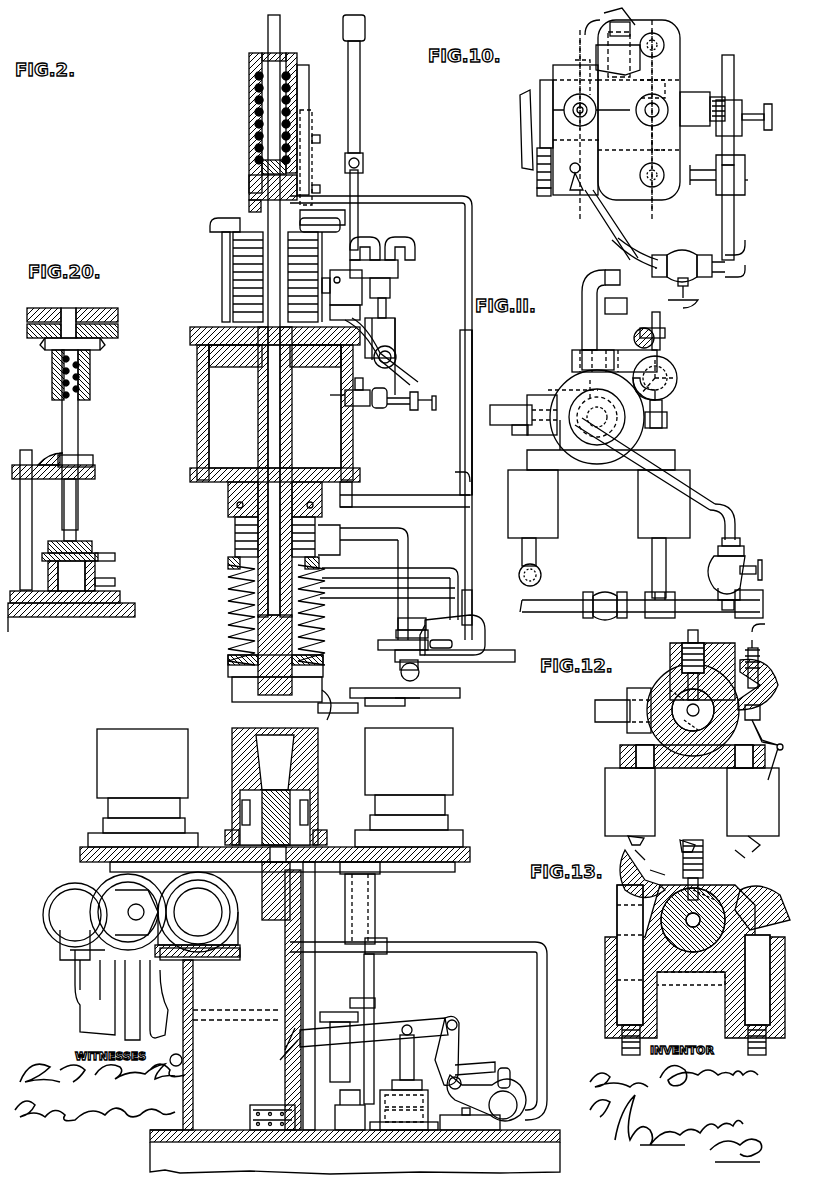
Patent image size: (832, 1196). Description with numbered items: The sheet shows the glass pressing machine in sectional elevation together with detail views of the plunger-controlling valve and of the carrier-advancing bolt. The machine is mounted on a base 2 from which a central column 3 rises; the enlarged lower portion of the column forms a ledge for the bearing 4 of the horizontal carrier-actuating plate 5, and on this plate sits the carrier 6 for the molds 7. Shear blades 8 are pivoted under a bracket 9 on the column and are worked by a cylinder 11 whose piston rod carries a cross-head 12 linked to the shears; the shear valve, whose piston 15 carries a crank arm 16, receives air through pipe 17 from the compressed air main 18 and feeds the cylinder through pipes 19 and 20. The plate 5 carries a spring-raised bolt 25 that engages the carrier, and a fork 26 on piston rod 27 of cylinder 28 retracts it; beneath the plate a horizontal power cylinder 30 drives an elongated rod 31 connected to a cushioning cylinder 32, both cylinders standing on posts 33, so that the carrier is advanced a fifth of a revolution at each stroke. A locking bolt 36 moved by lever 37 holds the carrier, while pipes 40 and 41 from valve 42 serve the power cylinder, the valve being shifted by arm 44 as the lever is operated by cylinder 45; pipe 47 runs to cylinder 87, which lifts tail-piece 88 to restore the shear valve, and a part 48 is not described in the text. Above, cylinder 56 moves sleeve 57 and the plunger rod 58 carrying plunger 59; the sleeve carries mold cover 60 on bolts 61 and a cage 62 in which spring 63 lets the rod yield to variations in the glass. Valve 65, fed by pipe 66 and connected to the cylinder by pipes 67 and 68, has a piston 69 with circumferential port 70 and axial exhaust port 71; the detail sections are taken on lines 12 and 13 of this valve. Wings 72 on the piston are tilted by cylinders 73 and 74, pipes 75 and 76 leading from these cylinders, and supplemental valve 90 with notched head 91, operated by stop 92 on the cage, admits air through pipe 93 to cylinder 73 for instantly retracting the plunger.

In FIG. 2, the base 2 is at (365, 1152).
In FIG. 20, the base 2 is at (100, 610).
In FIG. 2, the central column 3 is at (240, 248).
In FIG. 2, the bearing 4 is at (376, 900).
In FIG. 20, the carrier-actuating plate 5 is at (108, 340).
In FIG. 20, the carrier 6 is at (105, 310).
In FIG. 2, the molds 7 is at (135, 740).
In FIG. 2, the shear blades 8 is at (432, 698).
In FIG. 2, the bracket 9 is at (303, 655).
In FIG. 2, the cylinder 11 is at (340, 715).
In FIG. 10, the cross-head 12 is at (594, 29).
In FIG. 10, the section line 13 is at (638, 21).
In FIG. 2, the piston 15 is at (470, 625).
In FIG. 2, the crank arm 16 is at (475, 636).
In FIG. 2, the pipe 17 is at (472, 601).
In FIG. 2, the compressed air main 18 is at (360, 82).
In FIG. 2, the pipe 19 is at (420, 592).
In FIG. 2, the pipe 20 is at (462, 573).
In FIG. 2, the spring-raised bolt 25 is at (374, 966).
In FIG. 20, the spring-raised bolt 25 is at (72, 415).
In FIG. 2, the fork 26 is at (358, 1018).
In FIG. 20, the fork 26 is at (95, 482).
In FIG. 20, the piston rod 27 is at (78, 512).
In FIG. 2, the cylinder 28 is at (320, 1122).
In FIG. 20, the cylinder 28 is at (95, 568).
In FIG. 2, the power cylinder 30 is at (197, 914).
In FIG. 2, the elongated rod 31 is at (135, 915).
In FIG. 2, the cushioning cylinder 32 is at (75, 912).
In FIG. 2, the posts 33 is at (90, 1010).
In FIG. 2, the locking bolt 36 is at (318, 990).
In FIG. 2, the lever 37 is at (430, 1023).
In FIG. 2, the pipe 40 is at (460, 1115).
In FIG. 2, the pipe 41 is at (400, 945).
In FIG. 20, the pipe 41 is at (118, 556).
In FIG. 2, the valve 42 is at (520, 1085).
In FIG. 2, the arm 44 is at (472, 1085).
In FIG. 2, the cylinder 45 is at (415, 1125).
In FIG. 2, the pipe 47 is at (408, 538).
In FIG. 2, the link 48 is at (470, 1060).
In FIG. 2, the cylinder 56 is at (197, 400).
In FIG. 2, the sleeve 57 is at (258, 408).
In FIG. 2, the plunger rod 58 is at (268, 430).
In FIG. 2, the plunger 59 is at (232, 700).
In FIG. 2, the mold cover 60 is at (232, 680).
In FIG. 2, the bolts 61 is at (233, 555).
In FIG. 2, the spring cage 62 is at (249, 155).
In FIG. 10, the spring cage 62 is at (520, 155).
In FIG. 2, the spring 63 is at (255, 115).
In FIG. 10, the valve 65 is at (553, 68).
In FIG. 11, the valve 65 is at (578, 385).
In FIG. 2, the pipe 66 is at (358, 213).
In FIG. 10, the pipe 66 is at (612, 30).
In FIG. 11, the pipe 66 is at (498, 403).
In FIG. 12, the pipe 66 is at (612, 708).
In FIG. 2, the pipe 67 is at (222, 273).
In FIG. 10, the pipe 67 is at (575, 110).
In FIG. 11, the pipe 67 is at (590, 280).
In FIG. 12, the pipe 67 is at (690, 638).
In FIG. 2, the pipe 68 is at (408, 463).
In FIG. 10, the pipe 68 is at (660, 105).
In FIG. 11, the pipe 68 is at (625, 304).
In FIG. 12, the pipe 68 is at (683, 838).
In FIG. 10, the valve piston 69 is at (540, 84).
In FIG. 11, the valve piston 69 is at (602, 440).
In FIG. 10, the circumferential port 70 is at (618, 54).
In FIG. 10, the axial exhaust port 71 is at (708, 104).
In FIG. 11, the axial exhaust port 71 is at (590, 420).
In FIG. 12, the axial exhaust port 71 is at (690, 760).
In FIG. 13, the axial exhaust port 71 is at (690, 968).
In FIG. 12, the wing 72 is at (647, 849).
In FIG. 13, the wing 72 is at (653, 857).
In FIG. 2, the cylinder 73 is at (385, 335).
In FIG. 10, the cylinder 73 is at (640, 190).
In FIG. 11, the cylinder 73 is at (688, 527).
In FIG. 12, the cylinder 73 is at (728, 808).
In FIG. 13, the cylinder 73 is at (612, 996).
In FIG. 11, the cylinder 74 is at (556, 516).
In FIG. 12, the cylinder 74 is at (608, 804).
In FIG. 13, the cylinder 74 is at (732, 1018).
In FIG. 2, the pipe 75 is at (387, 409).
In FIG. 10, the pipe 75 is at (734, 60).
In FIG. 11, the pipe 75 is at (560, 600).
In FIG. 12, the pipe 75 is at (767, 844).
In FIG. 2, the pipe 76 is at (350, 396).
In FIG. 10, the pipe 76 is at (664, 40).
In FIG. 11, the pipe 76 is at (548, 566).
In FIG. 12, the pipe 76 is at (628, 840).
In FIG. 2, the cylinder 87 is at (468, 665).
In FIG. 2, the tail-piece 88 is at (405, 622).
In FIG. 2, the supplemental valve 90 is at (345, 290).
In FIG. 12, the supplemental valve 90 is at (760, 712).
In FIG. 13, the supplemental valve 90 is at (615, 887).
In FIG. 2, the notched actuating head 91 is at (375, 250).
In FIG. 10, the notched actuating head 91 is at (540, 196).
In FIG. 11, the notched actuating head 91 is at (678, 380).
In FIG. 2, the stop 92 is at (312, 190).
In FIG. 10, the stop 92 is at (537, 175).
In FIG. 11, the stop 92 is at (614, 351).
In FIG. 2, the pipe 93 is at (405, 378).
In FIG. 10, the pipe 93 is at (617, 225).
In FIG. 11, the pipe 93 is at (638, 262).
In FIG. 12, the pipe 93 is at (767, 772).